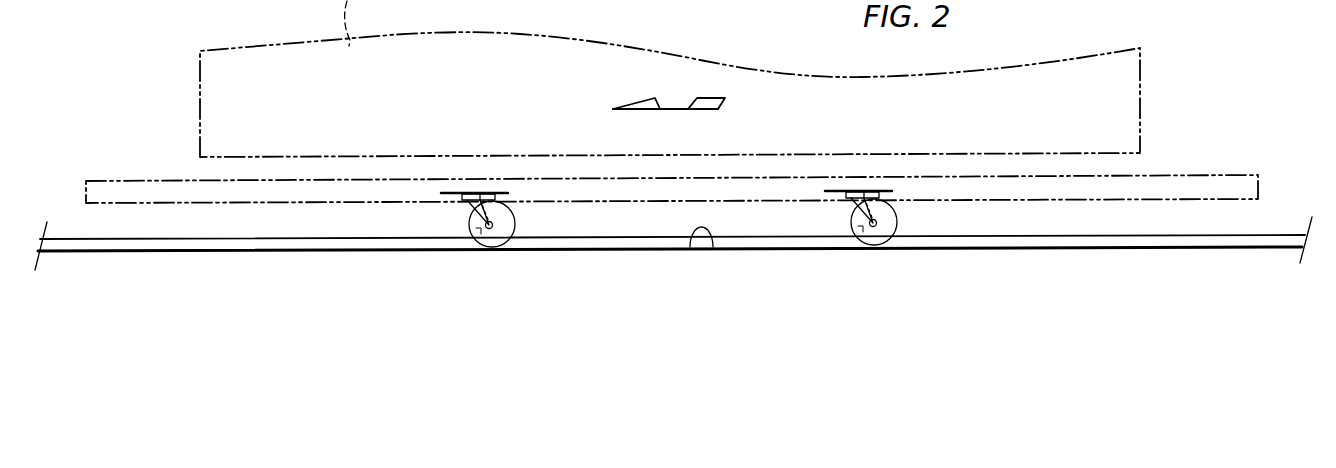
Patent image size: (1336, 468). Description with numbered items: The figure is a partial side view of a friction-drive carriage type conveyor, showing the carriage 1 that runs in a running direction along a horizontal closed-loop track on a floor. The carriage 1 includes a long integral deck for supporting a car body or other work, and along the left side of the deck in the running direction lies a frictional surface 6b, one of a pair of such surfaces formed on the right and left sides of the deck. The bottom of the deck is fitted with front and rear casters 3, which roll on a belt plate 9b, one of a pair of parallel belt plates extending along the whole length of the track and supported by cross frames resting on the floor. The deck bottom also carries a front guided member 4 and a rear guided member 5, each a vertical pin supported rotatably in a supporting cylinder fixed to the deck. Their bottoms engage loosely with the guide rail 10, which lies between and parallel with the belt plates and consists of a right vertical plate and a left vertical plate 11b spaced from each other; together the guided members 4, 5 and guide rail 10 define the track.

The carriage 1 is at (145, 180).
The casters 3 is at (683, 252).
The front guided member 4 is at (480, 253).
The rear guided member 5 is at (862, 252).
The frictional surface 6b is at (415, 188).
The belt plate 9b is at (690, 248).
The guide rail 10 is at (290, 236).
The left vertical plate 11b is at (295, 246).